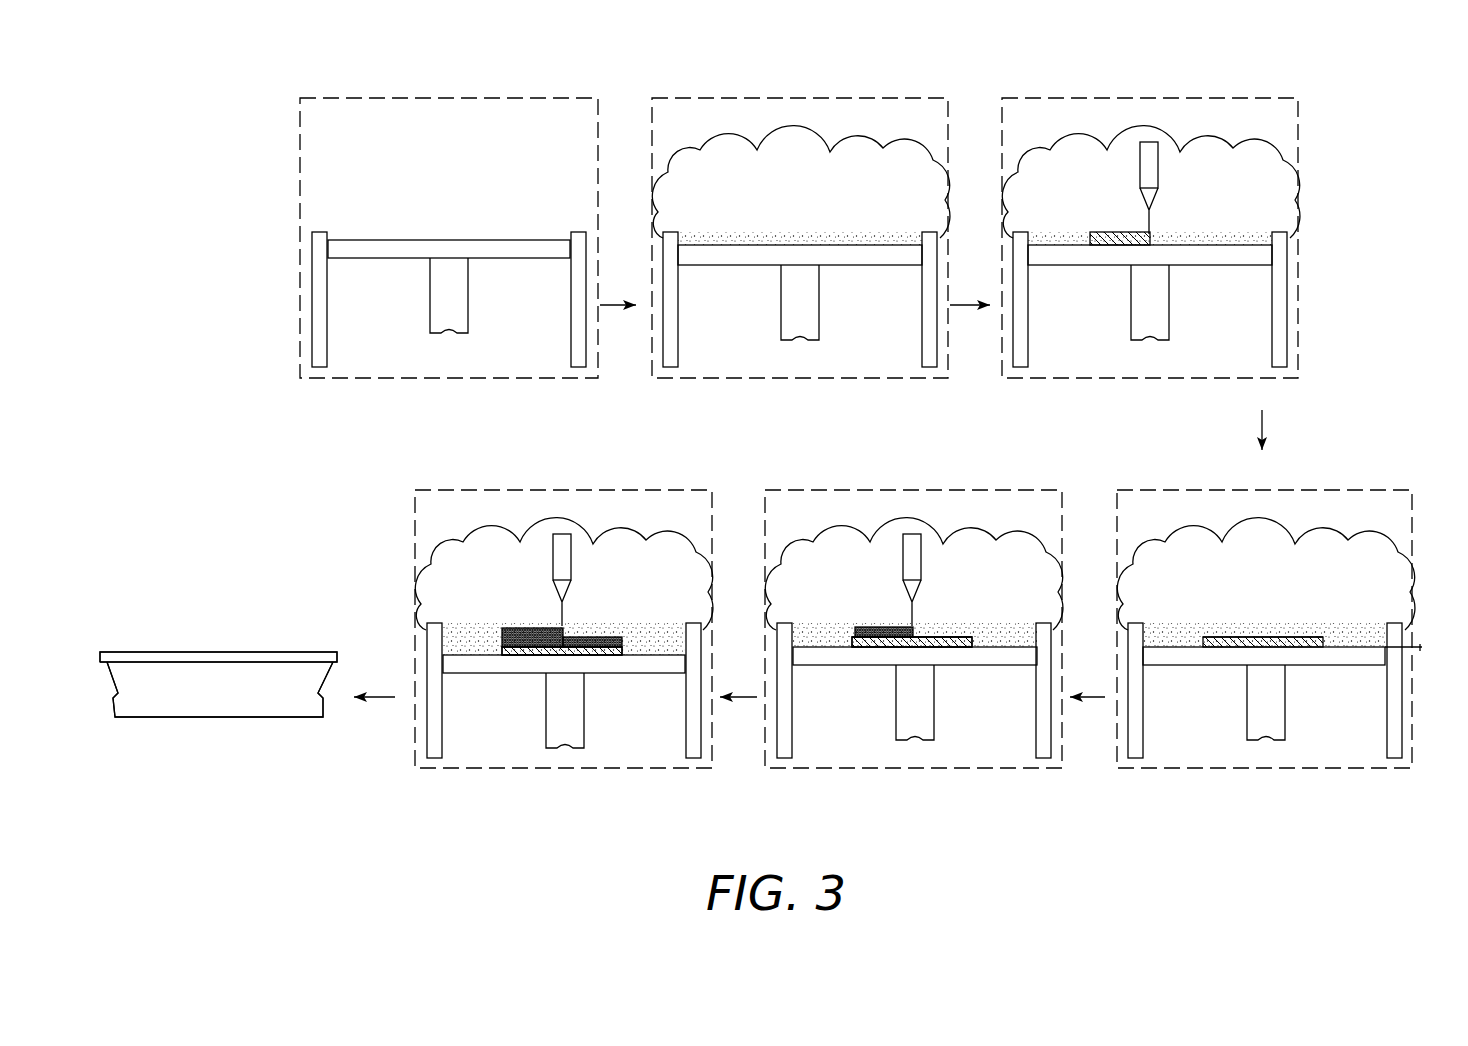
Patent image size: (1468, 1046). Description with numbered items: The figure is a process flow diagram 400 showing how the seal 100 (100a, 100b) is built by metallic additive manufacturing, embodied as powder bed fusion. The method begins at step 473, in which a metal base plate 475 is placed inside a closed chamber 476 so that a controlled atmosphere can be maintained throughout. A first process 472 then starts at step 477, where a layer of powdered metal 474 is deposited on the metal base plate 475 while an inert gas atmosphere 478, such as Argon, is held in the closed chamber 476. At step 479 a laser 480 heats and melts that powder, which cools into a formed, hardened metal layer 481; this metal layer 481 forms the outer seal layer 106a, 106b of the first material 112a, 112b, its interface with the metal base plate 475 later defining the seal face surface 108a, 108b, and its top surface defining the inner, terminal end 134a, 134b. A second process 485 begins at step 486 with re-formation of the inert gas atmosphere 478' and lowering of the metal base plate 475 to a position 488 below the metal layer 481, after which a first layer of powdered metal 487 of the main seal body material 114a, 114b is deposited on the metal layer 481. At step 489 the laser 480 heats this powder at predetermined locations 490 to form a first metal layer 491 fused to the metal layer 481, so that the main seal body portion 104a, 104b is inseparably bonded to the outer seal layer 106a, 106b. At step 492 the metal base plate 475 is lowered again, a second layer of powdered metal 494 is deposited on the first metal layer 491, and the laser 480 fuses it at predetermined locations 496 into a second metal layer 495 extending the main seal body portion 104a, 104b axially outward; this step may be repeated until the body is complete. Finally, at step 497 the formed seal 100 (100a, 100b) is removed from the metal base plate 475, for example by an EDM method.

The process flow diagram 400 is at (463, 66).
The step 473 is at (370, 124).
The closed chamber 476 is at (507, 98).
The metal base plate 475 is at (553, 248).
The first process 472 is at (720, 122).
The inert gas atmosphere 478 is at (995, 151).
The layer of powdered metal 474 is at (718, 238).
The step 477 is at (834, 278).
The laser 480 is at (1152, 162).
The metal layer 481 is at (1137, 234).
The step 479 is at (1184, 278).
The second process 485 is at (1183, 516).
The inert gas atmosphere 478' is at (918, 533).
The first layer of powdered metal 487 is at (1182, 628).
The inner, terminal end 134a is at (1285, 638).
The inner, terminal end 134b is at (1087, 602).
The step 486 is at (1236, 674).
The position 488 is at (1413, 652).
The main seal body material 114a is at (875, 622).
The main seal body material 114b is at (510, 631).
The main seal body portion 104a is at (862, 627).
The main seal body portion 104b is at (526, 619).
The first metal layer 491 is at (907, 627).
The predetermined locations 490 is at (921, 624).
The step 489 is at (991, 680).
The predetermined locations 496 is at (570, 624).
The second metal layer 495 is at (548, 627).
The second layer of powdered metal 494 is at (508, 628).
The outer seal layer 106a is at (950, 648).
The outer seal layer 106b is at (535, 688).
The first material 112a is at (885, 650).
The first material 112b is at (536, 655).
The step 492 is at (606, 694).
The seal 100 is at (249, 586).
The seal 100a is at (160, 684).
The seal 100b is at (278, 684).
The seal face surface 108a is at (178, 652).
The seal face surface 108b is at (536, 614).
The step 497 is at (288, 748).